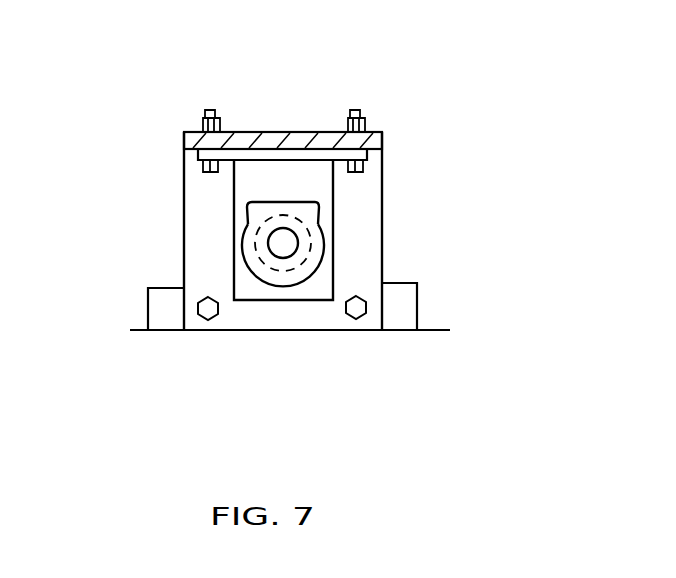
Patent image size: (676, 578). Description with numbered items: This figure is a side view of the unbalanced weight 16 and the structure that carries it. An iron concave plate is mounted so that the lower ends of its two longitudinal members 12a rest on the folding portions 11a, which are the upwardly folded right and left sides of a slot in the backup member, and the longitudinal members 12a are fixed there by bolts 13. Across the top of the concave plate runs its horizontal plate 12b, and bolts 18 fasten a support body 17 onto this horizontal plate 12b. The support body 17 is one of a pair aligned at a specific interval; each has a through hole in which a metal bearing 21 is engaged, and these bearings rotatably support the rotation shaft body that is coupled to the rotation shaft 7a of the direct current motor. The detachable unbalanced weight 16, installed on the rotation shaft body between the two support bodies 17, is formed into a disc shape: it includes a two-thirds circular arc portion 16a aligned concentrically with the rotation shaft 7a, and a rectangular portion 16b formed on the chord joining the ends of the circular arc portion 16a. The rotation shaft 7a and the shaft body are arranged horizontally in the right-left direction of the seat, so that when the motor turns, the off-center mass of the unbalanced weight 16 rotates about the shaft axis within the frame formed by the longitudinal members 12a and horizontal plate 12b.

The rotation shaft 7a is at (282, 240).
The folding portion 11a is at (407, 302).
The longitudinal member 12a is at (198, 233).
The horizontal plate 12b is at (288, 138).
The bolts 13 is at (356, 319).
The unbalanced weight 16 is at (412, 219).
The circular arc portion 16a is at (313, 258).
The rectangular portion 16b is at (283, 203).
The support body 17 is at (248, 178).
The bolts 18 is at (203, 163).
The metal bearing 21 is at (243, 262).